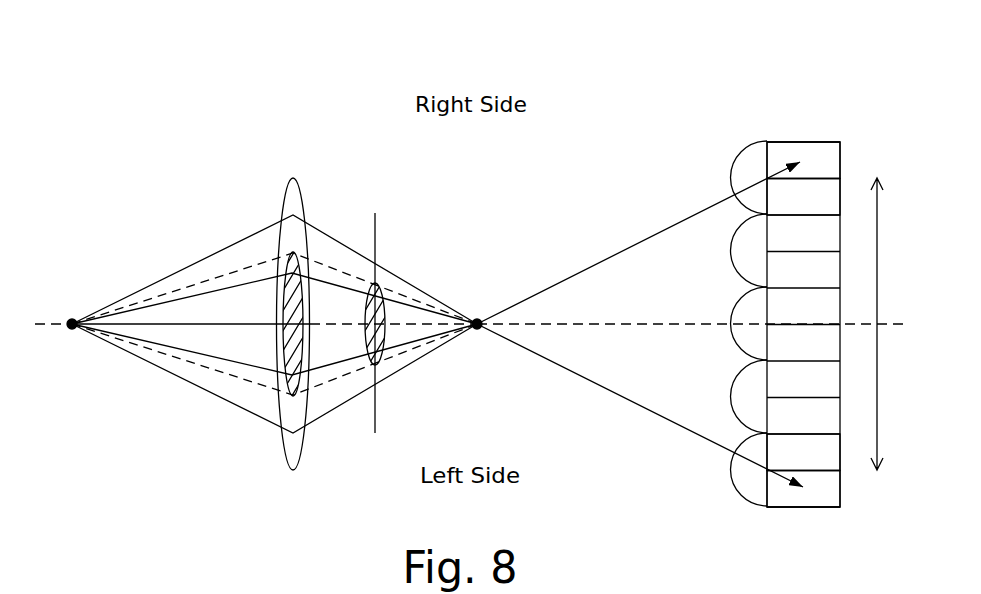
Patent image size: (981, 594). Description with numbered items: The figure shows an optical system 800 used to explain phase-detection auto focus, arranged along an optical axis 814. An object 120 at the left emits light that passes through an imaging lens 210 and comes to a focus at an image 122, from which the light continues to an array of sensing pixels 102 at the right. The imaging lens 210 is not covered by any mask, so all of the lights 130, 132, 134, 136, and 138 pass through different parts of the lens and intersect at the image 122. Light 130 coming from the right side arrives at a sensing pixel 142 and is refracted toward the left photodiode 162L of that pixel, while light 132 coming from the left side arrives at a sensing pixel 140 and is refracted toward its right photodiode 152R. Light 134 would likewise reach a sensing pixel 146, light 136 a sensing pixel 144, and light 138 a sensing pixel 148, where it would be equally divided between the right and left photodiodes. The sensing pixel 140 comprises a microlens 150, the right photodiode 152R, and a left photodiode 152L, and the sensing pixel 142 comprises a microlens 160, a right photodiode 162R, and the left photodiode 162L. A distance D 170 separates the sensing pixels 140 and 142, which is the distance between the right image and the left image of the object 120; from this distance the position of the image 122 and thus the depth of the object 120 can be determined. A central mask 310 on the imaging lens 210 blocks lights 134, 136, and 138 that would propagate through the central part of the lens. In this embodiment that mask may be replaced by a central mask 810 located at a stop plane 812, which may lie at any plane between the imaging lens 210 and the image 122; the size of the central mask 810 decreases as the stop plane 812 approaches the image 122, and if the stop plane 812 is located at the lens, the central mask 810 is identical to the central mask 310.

The optical system 800 is at (203, 86).
The array of sensing pixels 102 is at (753, 95).
The object 120 is at (67, 318).
The image 122 is at (481, 336).
The light 130 is at (200, 260).
The light 132 is at (207, 392).
The light 134 is at (252, 277).
The light 136 is at (250, 370).
The light 138 is at (163, 323).
The sensing pixel 140 is at (800, 133).
The sensing pixel 142 is at (800, 517).
The sensing pixel 144 is at (720, 242).
The sensing pixel 146 is at (720, 377).
The sensing pixel 148 is at (720, 305).
The microlens 150 is at (740, 158).
The microlens 160 is at (743, 500).
The right photodiode 152R is at (842, 158).
The left photodiode 152L is at (803, 197).
The right photodiode 162R is at (803, 452).
The left photodiode 162L is at (842, 490).
The distance D 170 is at (877, 268).
The imaging lens 210 is at (292, 178).
The central mask 310 is at (297, 256).
The central mask 810 is at (405, 285).
The stop plane 812 is at (377, 242).
The optical axis 814 is at (552, 323).